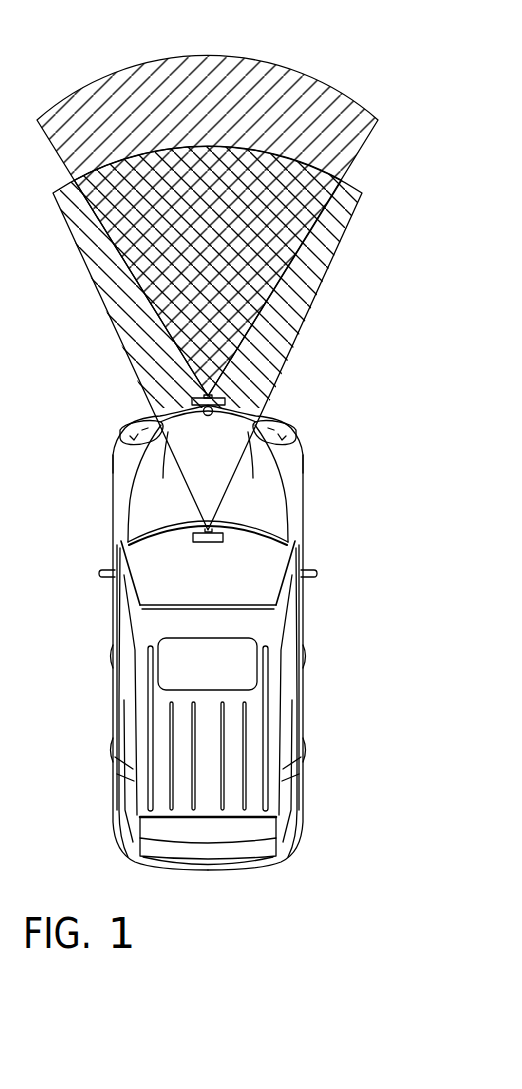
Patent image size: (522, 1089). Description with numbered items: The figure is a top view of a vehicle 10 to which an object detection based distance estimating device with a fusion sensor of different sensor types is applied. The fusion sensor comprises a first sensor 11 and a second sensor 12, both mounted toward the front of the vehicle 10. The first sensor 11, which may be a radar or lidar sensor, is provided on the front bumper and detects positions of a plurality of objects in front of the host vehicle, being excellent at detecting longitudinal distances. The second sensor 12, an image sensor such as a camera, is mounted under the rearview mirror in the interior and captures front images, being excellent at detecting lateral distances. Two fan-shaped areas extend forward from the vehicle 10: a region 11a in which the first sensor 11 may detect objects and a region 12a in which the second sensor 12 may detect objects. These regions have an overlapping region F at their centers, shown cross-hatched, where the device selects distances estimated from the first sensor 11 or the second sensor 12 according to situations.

The vehicle 10 is at (287, 485).
The first sensor 11 is at (226, 400).
The region in which the first sensor may detect the objects 11a is at (317, 92).
The second sensor 12 is at (193, 537).
The region in which the second sensor may detect the objects 12a is at (307, 275).
The overlapping region F is at (143, 227).